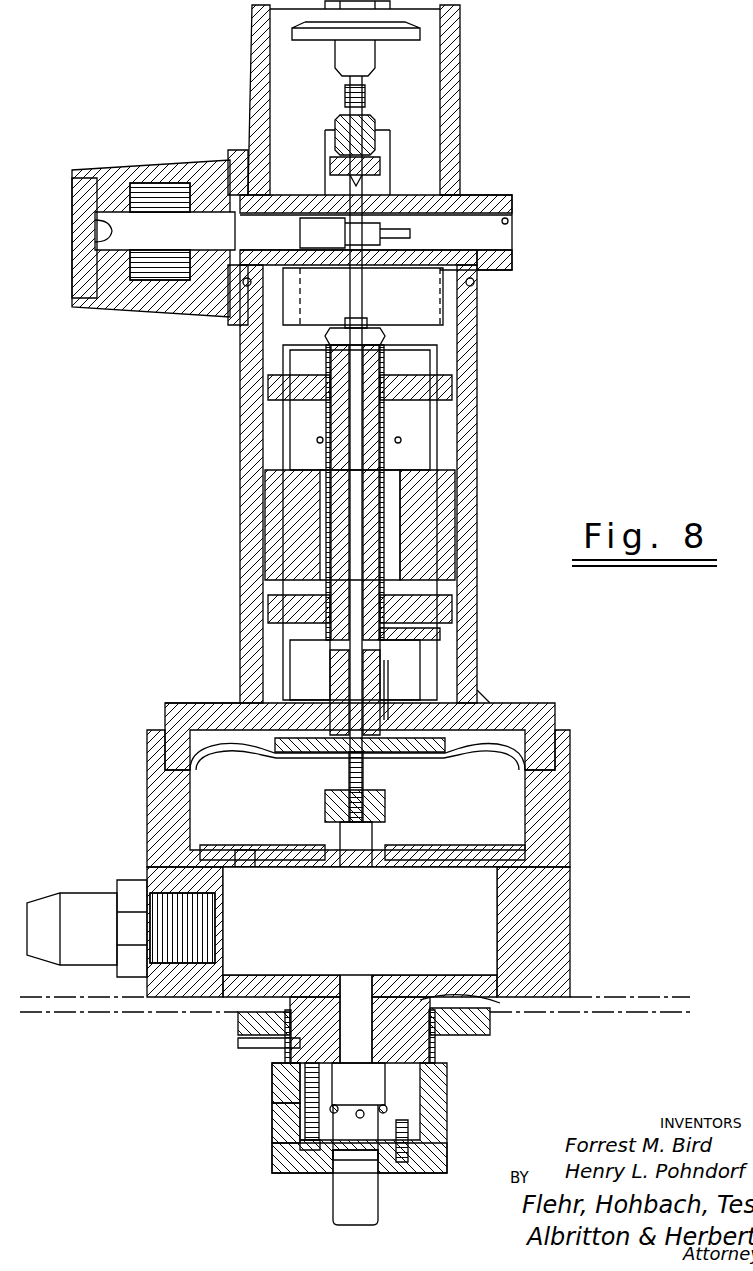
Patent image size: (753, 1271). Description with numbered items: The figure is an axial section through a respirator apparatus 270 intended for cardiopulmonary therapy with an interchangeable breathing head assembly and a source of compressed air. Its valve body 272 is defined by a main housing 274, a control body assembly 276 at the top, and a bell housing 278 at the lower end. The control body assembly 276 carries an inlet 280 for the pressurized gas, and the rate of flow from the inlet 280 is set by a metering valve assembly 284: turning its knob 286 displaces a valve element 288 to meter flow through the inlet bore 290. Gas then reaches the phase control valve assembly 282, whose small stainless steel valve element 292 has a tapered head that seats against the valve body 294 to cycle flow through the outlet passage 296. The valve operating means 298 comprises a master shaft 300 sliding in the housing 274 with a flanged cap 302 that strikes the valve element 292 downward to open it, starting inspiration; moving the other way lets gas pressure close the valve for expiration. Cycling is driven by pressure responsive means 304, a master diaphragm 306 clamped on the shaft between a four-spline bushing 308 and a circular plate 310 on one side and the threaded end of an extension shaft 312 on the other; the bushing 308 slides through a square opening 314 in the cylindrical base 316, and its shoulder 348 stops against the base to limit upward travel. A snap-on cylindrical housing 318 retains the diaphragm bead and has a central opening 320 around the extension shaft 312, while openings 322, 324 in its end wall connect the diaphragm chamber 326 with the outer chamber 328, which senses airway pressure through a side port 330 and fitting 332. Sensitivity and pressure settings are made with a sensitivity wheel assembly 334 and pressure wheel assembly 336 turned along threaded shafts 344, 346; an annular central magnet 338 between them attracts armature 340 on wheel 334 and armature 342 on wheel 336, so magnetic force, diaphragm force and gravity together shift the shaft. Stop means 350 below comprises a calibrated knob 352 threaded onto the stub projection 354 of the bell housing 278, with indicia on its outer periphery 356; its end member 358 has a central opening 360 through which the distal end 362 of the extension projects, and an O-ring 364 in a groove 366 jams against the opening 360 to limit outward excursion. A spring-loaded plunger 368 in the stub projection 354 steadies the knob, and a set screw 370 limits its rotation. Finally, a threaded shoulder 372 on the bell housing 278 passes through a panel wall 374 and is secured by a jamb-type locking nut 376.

The apparatus 270 is at (473, 416).
The valve body 272 is at (470, 450).
The main housing 274 is at (478, 398).
The control body assembly 276 is at (463, 118).
The bell housing 278 is at (572, 892).
The inlet 280 is at (513, 222).
The phase control valve assembly 282 is at (352, 449).
The metering valve assembly 284 is at (162, 160).
The metering valve assembly knob 286 is at (142, 310).
The valve element 288 is at (300, 240).
The inlet bore 290 is at (420, 235).
The valve element 292 is at (364, 100).
The valve body 294 is at (376, 118).
The outlet passage 296 is at (340, 165).
The valve operating means 298 is at (372, 316).
The master shaft 300 is at (369, 322).
The flanged cap 302 is at (397, 40).
The pressure responsive means 304 is at (530, 715).
The master diaphragm 306 is at (472, 756).
The four-spline bushing 308 is at (310, 669).
The circular plate 310 is at (472, 704).
The extension shaft 312 is at (339, 903).
The square opening 314 is at (390, 690).
The cylindrical base 316 is at (212, 702).
The snap-on cylindrical housing 318 is at (148, 768).
The central opening 320 is at (312, 848).
The opening 322 is at (247, 858).
The opening 324 is at (470, 860).
The chamber 326 is at (447, 810).
The outer chamber 328 is at (445, 934).
The side port 330 is at (216, 950).
The fitting 332 is at (100, 905).
The sensitivity wheel assembly 334 is at (262, 609).
The pressure wheel assembly 336 is at (262, 385).
The central magnet 338 is at (455, 500).
The metal armature 340 is at (442, 588).
The metal armature 342 is at (432, 406).
The threaded shaft 344 is at (386, 446).
The threaded shaft 346 is at (386, 635).
The shoulder 348 is at (328, 712).
The stop means 350 is at (292, 1139).
The calibrated knob 352 is at (271, 1132).
The stub projection 354 is at (292, 1052).
The outer periphery 356 is at (271, 1077).
The end member 358 is at (312, 1175).
The central opening 360 is at (374, 1172).
The distal end 362 is at (345, 1210).
The O-ring 364 is at (392, 1110).
The groove 366 is at (360, 1118).
The plunger 368 is at (282, 1150).
The set screw 370 is at (410, 1136).
The shoulder 372 is at (450, 1006).
The wall 374 is at (630, 985).
The locking nut 376 is at (470, 1010).